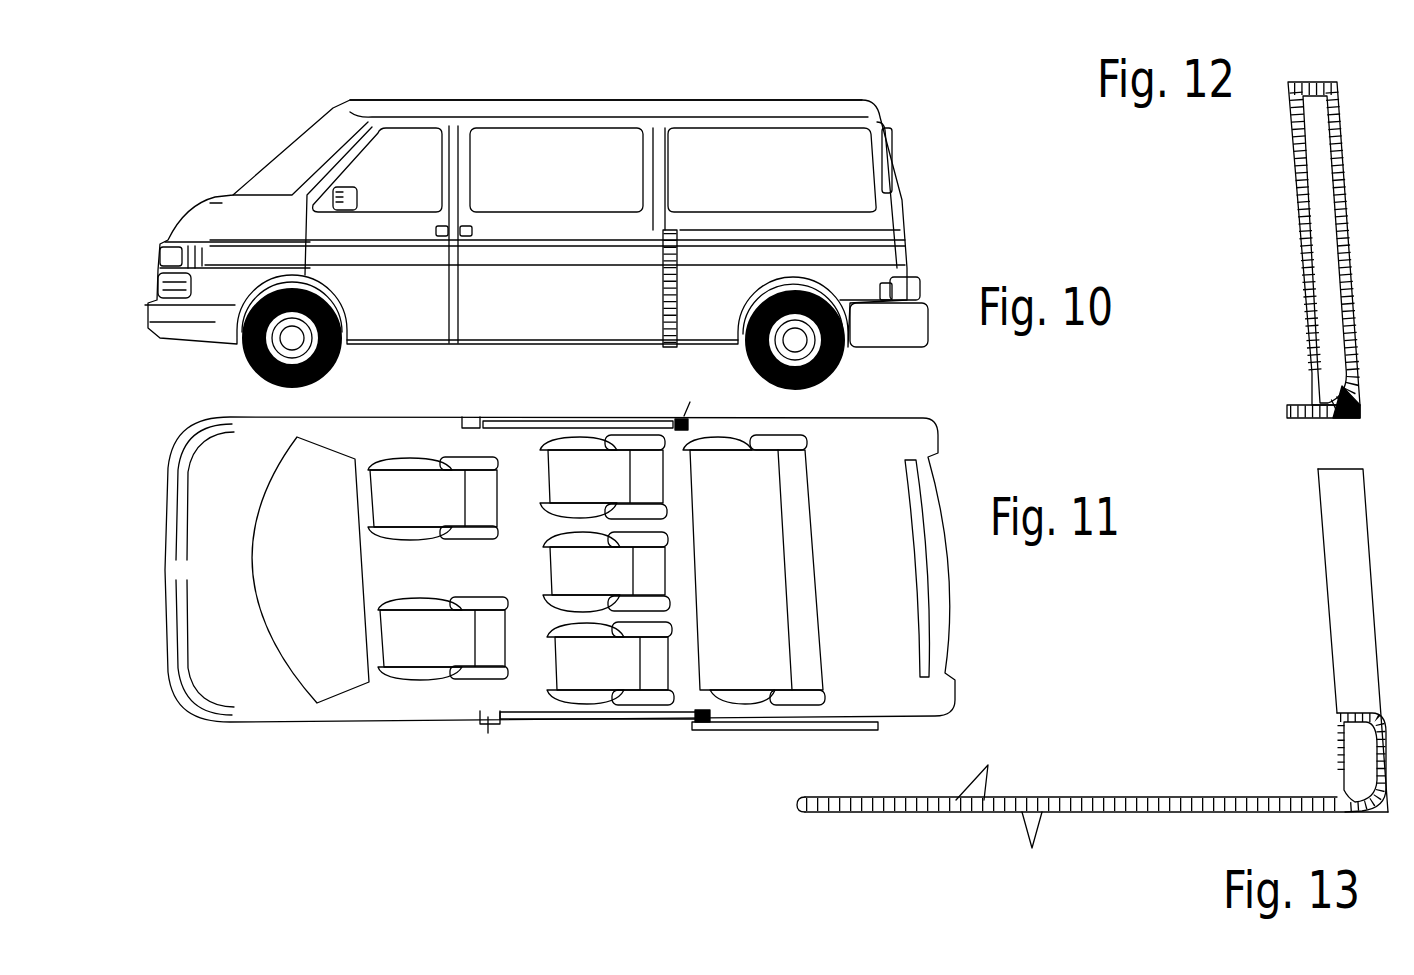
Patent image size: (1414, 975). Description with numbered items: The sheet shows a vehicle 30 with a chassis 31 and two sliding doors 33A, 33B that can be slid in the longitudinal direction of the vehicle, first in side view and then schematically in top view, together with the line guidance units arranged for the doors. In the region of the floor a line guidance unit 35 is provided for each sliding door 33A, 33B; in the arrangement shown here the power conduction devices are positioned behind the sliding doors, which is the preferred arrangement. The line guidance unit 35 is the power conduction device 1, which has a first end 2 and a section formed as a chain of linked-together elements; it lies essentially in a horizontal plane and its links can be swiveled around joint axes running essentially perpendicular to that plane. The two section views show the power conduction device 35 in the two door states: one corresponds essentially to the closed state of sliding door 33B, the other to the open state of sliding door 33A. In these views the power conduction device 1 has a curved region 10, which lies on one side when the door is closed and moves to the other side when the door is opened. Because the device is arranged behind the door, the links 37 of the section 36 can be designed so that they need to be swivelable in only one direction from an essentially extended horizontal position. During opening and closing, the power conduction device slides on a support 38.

In FIG. 12, the power conduction device 1 is at (1312, 363).
In FIG. 13, the power conduction device 1 is at (1340, 757).
In FIG. 12, the first end 2 is at (1290, 410).
In FIG. 13, the first end 2 is at (1054, 811).
In FIG. 13, the curved region 10 is at (1309, 727).
In FIG. 10, the vehicle 30 is at (932, 102).
In FIG. 10, the chassis 31 is at (607, 107).
In FIG. 10, the sliding door 33A is at (593, 288).
In FIG. 11, the sliding door 33A is at (735, 731).
In FIG. 11, the sliding door 33B is at (541, 418).
In FIG. 12, the line guidance unit 35 is at (1243, 270).
In FIG. 13, the line guidance unit 35 is at (1054, 768).
In FIG. 13, the section 36 is at (922, 812).
In FIG. 13, the links 37 is at (1001, 811).
In FIG. 11, the support 38 is at (541, 716).